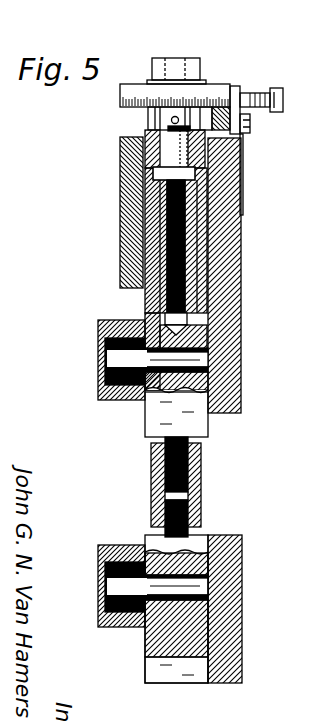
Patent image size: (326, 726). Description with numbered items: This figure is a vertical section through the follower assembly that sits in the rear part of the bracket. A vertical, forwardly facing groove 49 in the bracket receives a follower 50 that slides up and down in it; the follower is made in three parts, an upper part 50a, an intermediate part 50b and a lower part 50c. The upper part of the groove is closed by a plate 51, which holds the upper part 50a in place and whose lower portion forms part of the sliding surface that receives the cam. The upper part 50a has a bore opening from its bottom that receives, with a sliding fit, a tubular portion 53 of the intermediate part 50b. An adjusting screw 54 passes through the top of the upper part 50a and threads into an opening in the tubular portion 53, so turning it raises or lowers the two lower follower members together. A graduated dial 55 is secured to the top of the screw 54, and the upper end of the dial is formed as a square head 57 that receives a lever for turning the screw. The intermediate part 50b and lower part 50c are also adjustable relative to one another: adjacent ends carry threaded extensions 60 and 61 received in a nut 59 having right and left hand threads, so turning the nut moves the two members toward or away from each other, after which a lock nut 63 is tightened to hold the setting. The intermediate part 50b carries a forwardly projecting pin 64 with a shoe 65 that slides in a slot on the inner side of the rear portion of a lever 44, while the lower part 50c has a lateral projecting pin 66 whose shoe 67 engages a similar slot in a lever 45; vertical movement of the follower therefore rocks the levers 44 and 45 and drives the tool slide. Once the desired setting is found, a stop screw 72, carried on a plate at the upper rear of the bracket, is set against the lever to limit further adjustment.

The square head 57 is at (203, 68).
The stop screw 72 is at (262, 92).
The dial 55 is at (122, 103).
The adjusting screw 54 is at (240, 147).
The tubular portion 53 is at (187, 207).
The plate 51 is at (125, 222).
The follower 50 is at (145, 300).
The upper part of the follower 50a is at (203, 237).
The forwardly projecting pin 64 is at (203, 338).
The lever 44 is at (100, 393).
The shoe 65 is at (118, 400).
The intermediate part of the follower 50b is at (205, 425).
The lock nut 63 is at (150, 457).
The threaded extension 60 is at (200, 473).
The nut 59 is at (200, 495).
The threaded extension 61 is at (200, 508).
The lever 45 is at (98, 550).
The lateral projecting pin 66 is at (195, 572).
The lower part of the follower 50c is at (200, 620).
The shoe 67 is at (125, 612).
The groove 49 is at (200, 670).